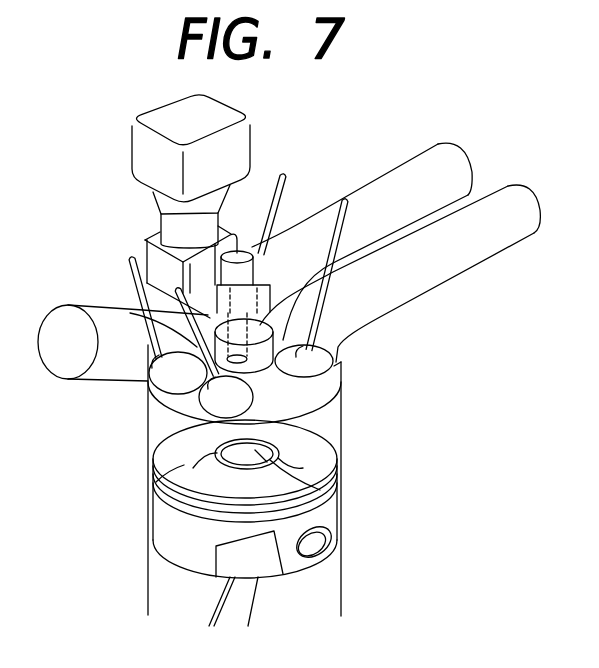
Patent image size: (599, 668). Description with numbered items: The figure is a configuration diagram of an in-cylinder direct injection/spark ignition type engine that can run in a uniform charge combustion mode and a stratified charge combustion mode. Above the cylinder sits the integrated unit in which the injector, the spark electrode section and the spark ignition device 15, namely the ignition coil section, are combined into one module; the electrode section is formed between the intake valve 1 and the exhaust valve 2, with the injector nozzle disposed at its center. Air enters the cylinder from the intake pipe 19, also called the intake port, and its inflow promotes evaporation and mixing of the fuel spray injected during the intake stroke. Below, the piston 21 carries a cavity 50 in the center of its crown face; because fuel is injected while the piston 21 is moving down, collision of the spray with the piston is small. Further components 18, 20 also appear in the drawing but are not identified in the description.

The intake valve 1 is at (341, 373).
The exhaust valve 2 is at (147, 413).
The spark ignition device (ignition coil section) 15 is at (150, 158).
The cylinder block 18 is at (325, 423).
The intake pipe (intake port) 19 is at (405, 278).
The intake pipe 20 is at (121, 331).
The piston 21 is at (158, 487).
The cavity 50 is at (340, 493).